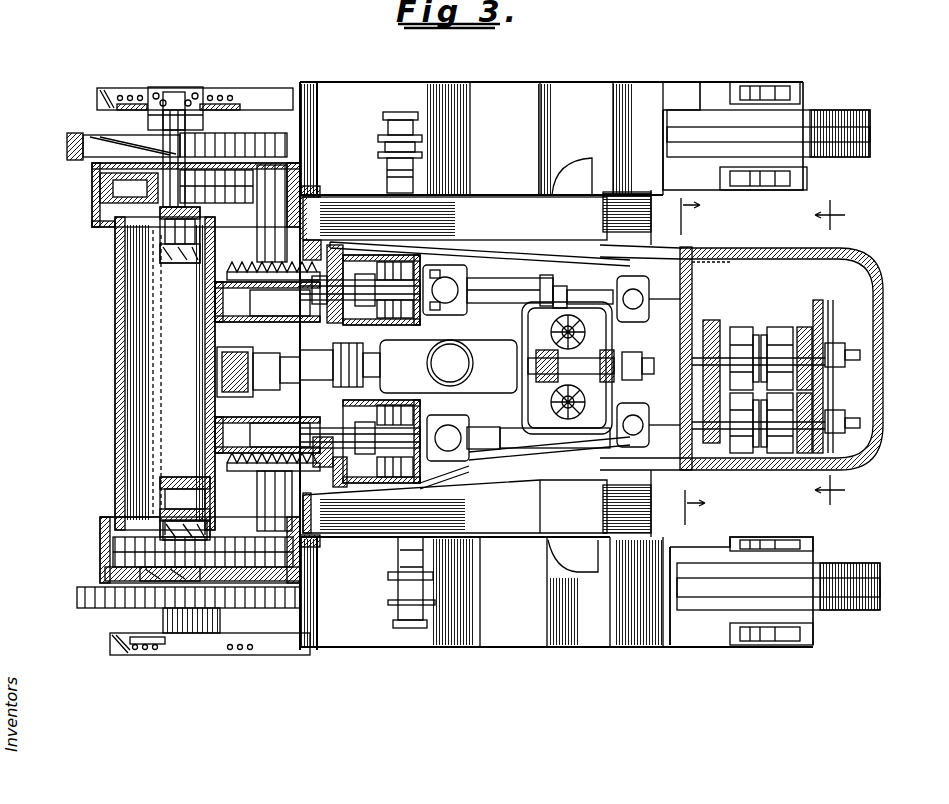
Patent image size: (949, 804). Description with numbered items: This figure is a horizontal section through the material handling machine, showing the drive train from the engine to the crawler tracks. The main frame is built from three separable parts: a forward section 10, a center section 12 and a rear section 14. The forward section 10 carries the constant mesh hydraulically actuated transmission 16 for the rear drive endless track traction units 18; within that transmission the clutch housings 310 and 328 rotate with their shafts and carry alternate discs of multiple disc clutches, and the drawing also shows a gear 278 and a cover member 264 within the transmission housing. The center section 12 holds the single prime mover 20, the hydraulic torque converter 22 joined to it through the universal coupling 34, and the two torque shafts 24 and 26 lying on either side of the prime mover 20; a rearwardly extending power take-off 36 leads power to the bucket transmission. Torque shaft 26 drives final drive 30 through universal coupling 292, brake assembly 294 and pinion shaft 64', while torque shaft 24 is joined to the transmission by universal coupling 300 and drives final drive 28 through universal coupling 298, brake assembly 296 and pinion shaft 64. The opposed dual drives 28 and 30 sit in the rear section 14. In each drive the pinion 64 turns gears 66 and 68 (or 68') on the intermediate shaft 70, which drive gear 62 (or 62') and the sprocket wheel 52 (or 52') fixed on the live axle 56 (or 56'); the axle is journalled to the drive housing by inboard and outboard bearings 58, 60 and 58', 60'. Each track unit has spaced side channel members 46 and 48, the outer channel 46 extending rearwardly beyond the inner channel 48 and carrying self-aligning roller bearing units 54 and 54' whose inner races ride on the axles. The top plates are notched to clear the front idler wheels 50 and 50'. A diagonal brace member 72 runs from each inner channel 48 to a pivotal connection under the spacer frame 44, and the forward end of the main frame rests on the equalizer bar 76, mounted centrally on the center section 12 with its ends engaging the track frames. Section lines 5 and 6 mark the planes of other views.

The forward section 10 is at (892, 379).
The center section 12 is at (522, 490).
The rear section 14 is at (107, 291).
The transmission 16 is at (803, 291).
The endless track type traction units 18 is at (542, 73).
The prime mover 20 is at (441, 372).
The hydraulic torque converter 22 is at (595, 293).
The torque shaft 24 is at (515, 450).
The torque shaft 26 is at (490, 285).
The final drive 28 is at (98, 544).
The final drive 30 is at (124, 216).
The universal coupling 34 is at (650, 358).
The power take-off 36 is at (383, 365).
The spacer frame 44 is at (117, 340).
The outer side channel member 46 is at (355, 82).
The inner side channel member 48 is at (805, 178).
The front idler wheel 50 is at (797, 586).
The front idler wheel 50' is at (792, 133).
The driven sprocket wheel 52 is at (165, 610).
The driven sprocket wheel 52' is at (147, 146).
The self-aligning roller bearing unit 54 is at (210, 663).
The self-aligning roller bearing unit 54' is at (195, 77).
The live axle shaft 56 is at (132, 514).
The live axle shaft 56' is at (175, 87).
The inboard bearing 58 is at (184, 487).
The inboard bearing 58' is at (180, 206).
The outboard bearing 60 is at (123, 573).
The outboard bearing 60' is at (85, 187).
The gear 62 is at (203, 535).
The gear 62' is at (216, 207).
The pinion shaft 64 is at (360, 468).
The pinion shaft 64' is at (360, 269).
The gear 66 is at (267, 367).
The gear 68 is at (324, 558).
The gear 68' is at (328, 183).
The intermediate shaft 70 is at (262, 240).
The diagonal brace member 72 is at (462, 222).
The equalizer bar 76 is at (650, 245).
The cover plate 264 is at (835, 333).
The gear 278 is at (710, 320).
The universal coupling 292 is at (473, 263).
The brake assembly 294 is at (410, 167).
The brake assembly 296 is at (400, 545).
The universal coupling 298 is at (470, 462).
The universal coupling 300 is at (612, 455).
The clutch housing 310 is at (773, 327).
The clutch housing 328 is at (740, 327).
The section line 5 is at (845, 352).
The section line 6 is at (684, 360).